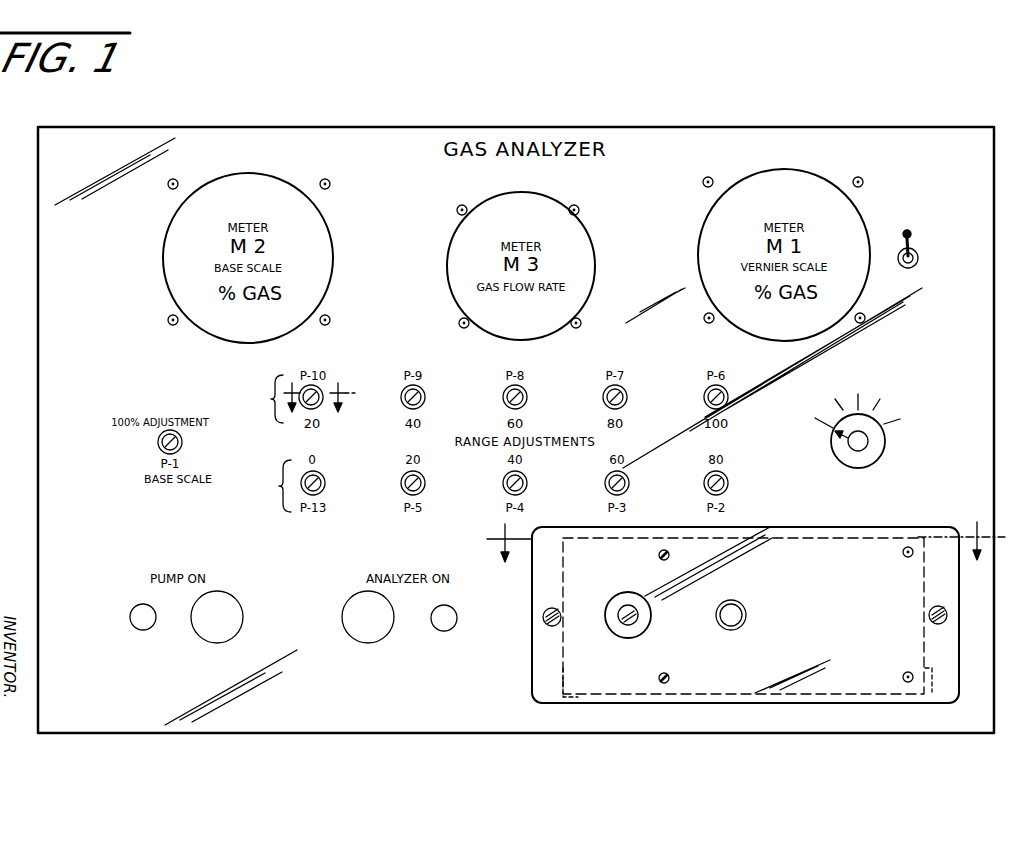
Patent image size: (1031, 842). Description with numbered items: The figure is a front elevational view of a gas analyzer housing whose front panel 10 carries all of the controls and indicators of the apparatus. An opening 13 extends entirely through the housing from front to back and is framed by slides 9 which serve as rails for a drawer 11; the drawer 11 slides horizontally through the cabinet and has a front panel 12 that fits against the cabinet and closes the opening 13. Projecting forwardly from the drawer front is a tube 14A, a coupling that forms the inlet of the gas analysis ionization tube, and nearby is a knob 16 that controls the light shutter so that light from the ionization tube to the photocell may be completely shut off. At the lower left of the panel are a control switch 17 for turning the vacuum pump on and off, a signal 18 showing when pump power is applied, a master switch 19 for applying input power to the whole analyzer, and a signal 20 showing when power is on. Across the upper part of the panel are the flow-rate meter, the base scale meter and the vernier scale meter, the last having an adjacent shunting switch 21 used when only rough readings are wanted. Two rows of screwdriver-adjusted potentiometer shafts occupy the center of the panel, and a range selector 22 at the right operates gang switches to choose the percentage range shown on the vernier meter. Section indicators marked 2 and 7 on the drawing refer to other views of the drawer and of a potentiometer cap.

The front panel 10 is at (995, 128).
The shunting switch 21 is at (922, 249).
The range selector 22 is at (882, 452).
The drawer 11 is at (920, 531).
The front panel of drawer 12 is at (943, 578).
The opening 13 is at (930, 652).
The slides 9 is at (559, 673).
The knob 16 is at (645, 616).
The tube 14A is at (746, 622).
The control switch 17 is at (130, 617).
The signal 18 is at (196, 625).
The switch 19 is at (455, 624).
The signal 20 is at (358, 636).
The section line 2- 2 is at (747, 542).
The section line 7- 7 is at (317, 400).